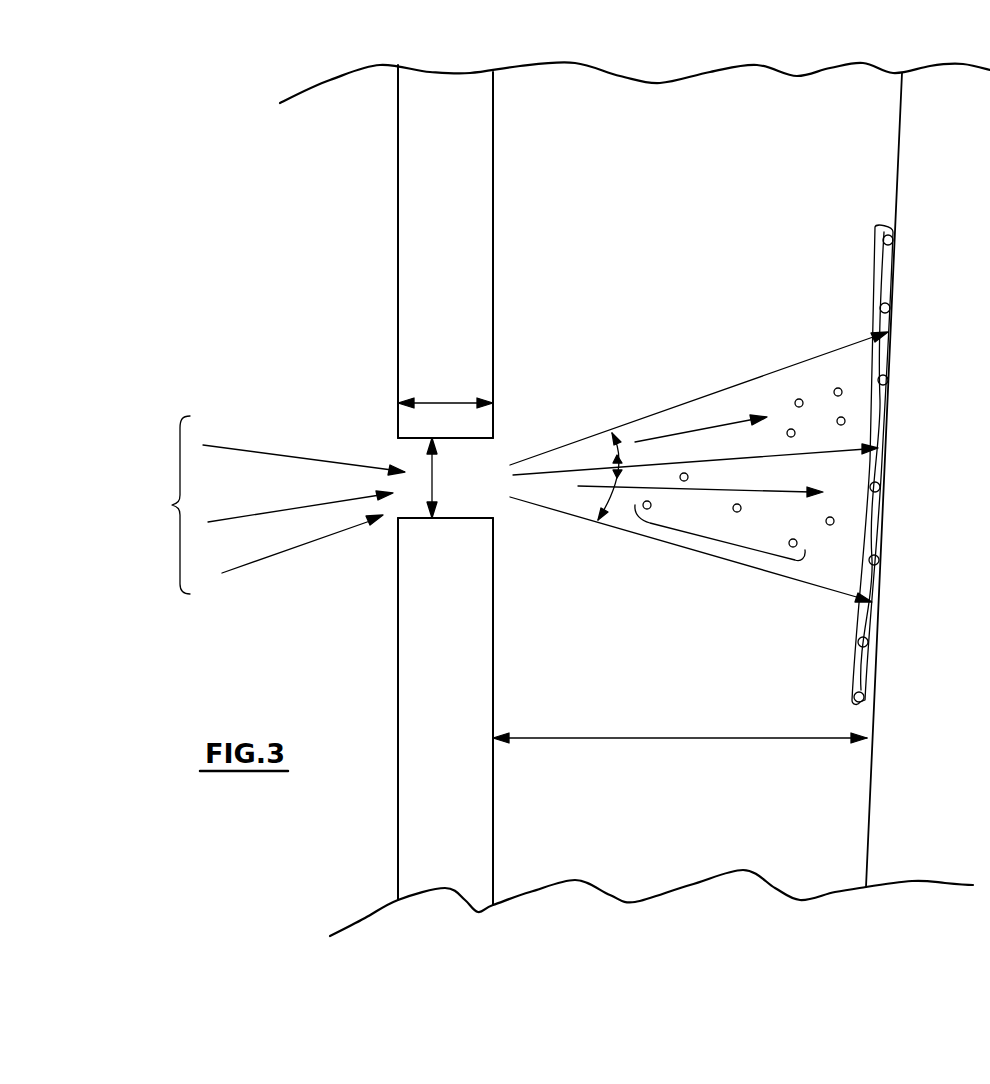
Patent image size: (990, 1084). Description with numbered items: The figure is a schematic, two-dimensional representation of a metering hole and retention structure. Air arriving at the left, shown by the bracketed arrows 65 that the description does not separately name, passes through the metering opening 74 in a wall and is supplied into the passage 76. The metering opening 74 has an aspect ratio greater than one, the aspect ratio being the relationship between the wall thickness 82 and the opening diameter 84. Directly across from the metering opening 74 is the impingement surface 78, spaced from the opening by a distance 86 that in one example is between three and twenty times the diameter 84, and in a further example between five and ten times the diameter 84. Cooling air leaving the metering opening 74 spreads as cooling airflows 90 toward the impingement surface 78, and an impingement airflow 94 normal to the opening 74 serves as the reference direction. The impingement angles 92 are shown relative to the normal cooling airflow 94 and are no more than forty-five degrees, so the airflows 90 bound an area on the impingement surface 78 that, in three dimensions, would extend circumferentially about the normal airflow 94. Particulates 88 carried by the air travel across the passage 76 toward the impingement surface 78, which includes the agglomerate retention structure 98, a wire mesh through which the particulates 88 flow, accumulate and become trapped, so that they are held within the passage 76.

The feedstock streams 65 is at (177, 504).
The metering opening 74 is at (400, 505).
The passage 76 is at (667, 213).
The impingement surface 78 is at (862, 758).
The thickness 82 is at (437, 403).
The opening diameter 84 is at (432, 488).
The distance 86 is at (615, 738).
The particulates 88 is at (720, 538).
The cooling airflow 90 is at (705, 395).
The impingement angle 92 is at (612, 445).
The normal airflow 94 is at (670, 462).
The agglomerate retention structure 98 is at (842, 634).